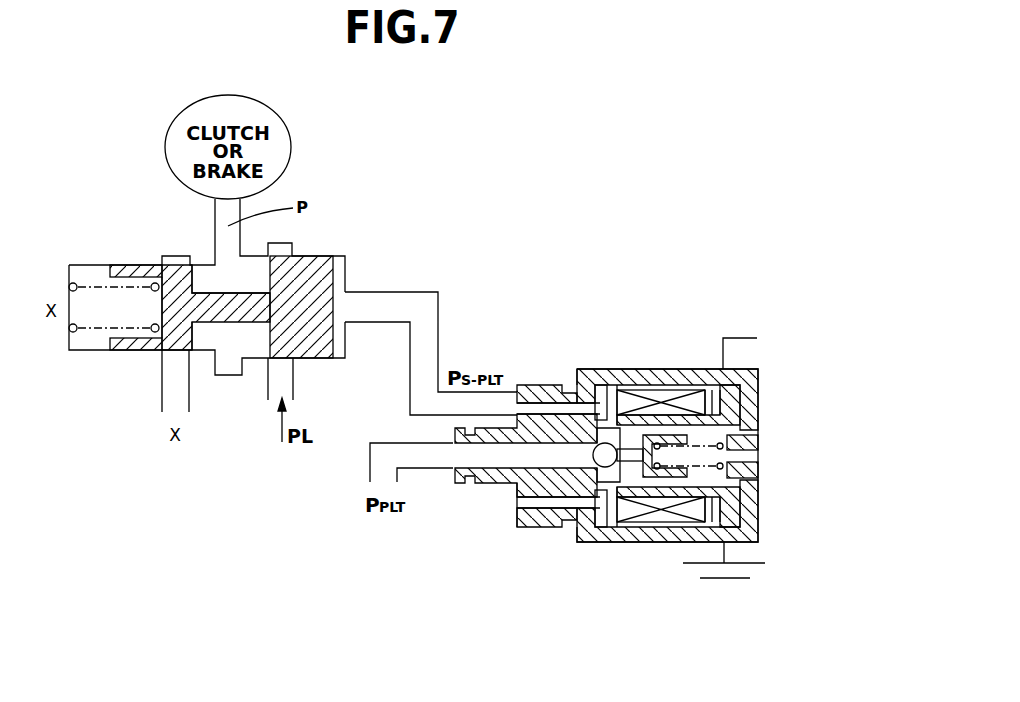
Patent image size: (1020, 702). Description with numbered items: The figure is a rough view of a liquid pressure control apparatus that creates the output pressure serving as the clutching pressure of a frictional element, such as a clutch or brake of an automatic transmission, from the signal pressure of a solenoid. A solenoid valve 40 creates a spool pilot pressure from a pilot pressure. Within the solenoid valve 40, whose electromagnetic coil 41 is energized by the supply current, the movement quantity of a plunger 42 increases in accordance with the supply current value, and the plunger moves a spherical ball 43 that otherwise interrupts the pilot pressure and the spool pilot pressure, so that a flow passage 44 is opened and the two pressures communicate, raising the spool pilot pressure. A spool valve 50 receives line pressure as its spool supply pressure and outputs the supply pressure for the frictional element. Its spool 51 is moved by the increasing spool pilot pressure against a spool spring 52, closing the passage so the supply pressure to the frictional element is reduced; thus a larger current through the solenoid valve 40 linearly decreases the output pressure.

The solenoid valve 40 is at (626, 547).
The coil 41 is at (659, 396).
The plunger 42 is at (696, 478).
The spherical ball 43 is at (601, 458).
The flow passage 44 is at (608, 400).
The spool valve 50 is at (236, 385).
The spool 51 is at (312, 268).
The spool spring 52 is at (93, 282).